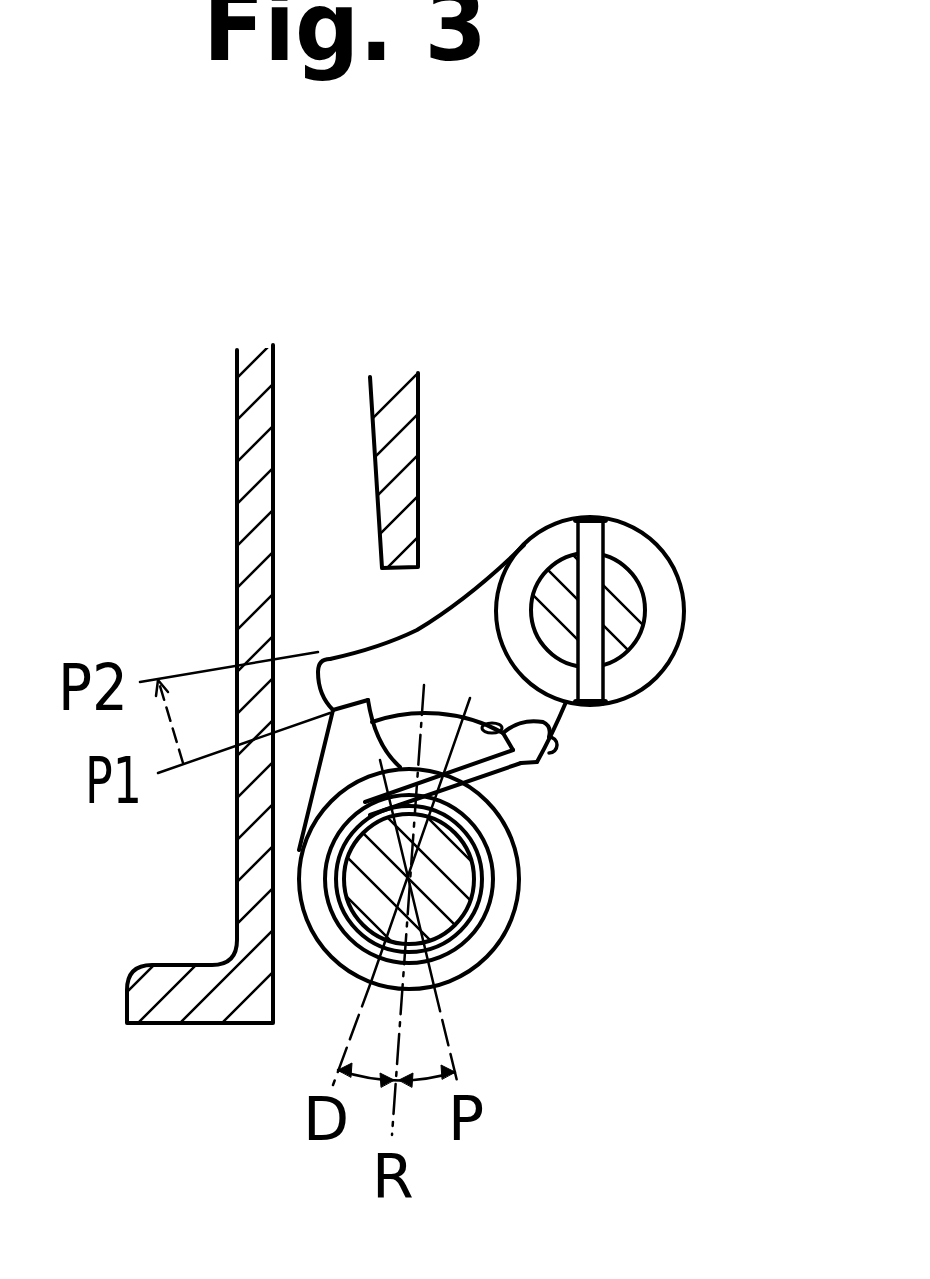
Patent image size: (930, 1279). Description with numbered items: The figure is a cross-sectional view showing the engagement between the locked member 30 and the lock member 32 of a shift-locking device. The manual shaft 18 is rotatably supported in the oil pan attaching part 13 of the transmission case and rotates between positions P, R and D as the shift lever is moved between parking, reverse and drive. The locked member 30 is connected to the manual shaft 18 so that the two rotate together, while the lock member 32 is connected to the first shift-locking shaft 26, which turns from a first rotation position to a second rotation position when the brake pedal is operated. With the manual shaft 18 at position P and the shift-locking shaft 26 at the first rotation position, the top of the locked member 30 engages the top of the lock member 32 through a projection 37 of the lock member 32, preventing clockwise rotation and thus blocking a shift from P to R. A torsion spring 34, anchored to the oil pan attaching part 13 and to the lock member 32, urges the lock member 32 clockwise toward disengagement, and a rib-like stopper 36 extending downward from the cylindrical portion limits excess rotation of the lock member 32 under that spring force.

The oil pan attaching part 13 is at (245, 520).
The manual shaft 18 is at (450, 895).
The first shift-locking shaft 26 is at (622, 605).
The locked member 30 is at (340, 765).
The lock member 32 is at (627, 535).
The torsion spring 34 is at (487, 773).
The stopper 36 is at (403, 425).
The engaging projection 37 is at (552, 730).